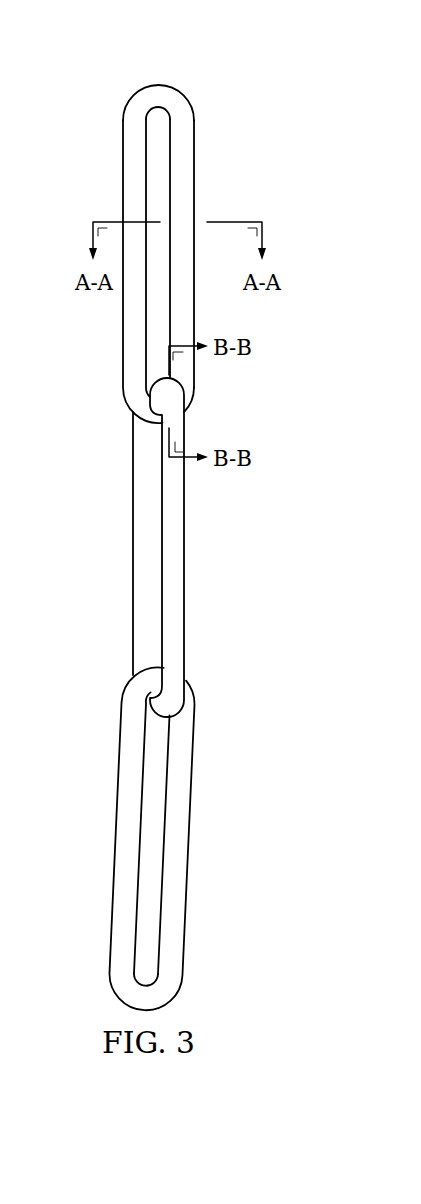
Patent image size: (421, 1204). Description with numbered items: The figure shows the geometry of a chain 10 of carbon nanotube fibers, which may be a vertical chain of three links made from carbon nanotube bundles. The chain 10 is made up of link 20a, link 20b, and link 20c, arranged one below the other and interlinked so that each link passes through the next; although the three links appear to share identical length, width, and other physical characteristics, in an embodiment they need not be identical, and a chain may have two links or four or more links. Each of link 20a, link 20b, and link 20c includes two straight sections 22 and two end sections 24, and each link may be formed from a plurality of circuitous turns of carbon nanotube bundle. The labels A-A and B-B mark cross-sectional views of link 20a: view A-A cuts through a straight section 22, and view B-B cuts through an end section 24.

The chain 10 is at (118, 66).
The link 20a is at (114, 180).
The link 20b is at (124, 547).
The link 20c is at (200, 857).
The straight section 22 is at (194, 193).
The end section 24 is at (163, 86).